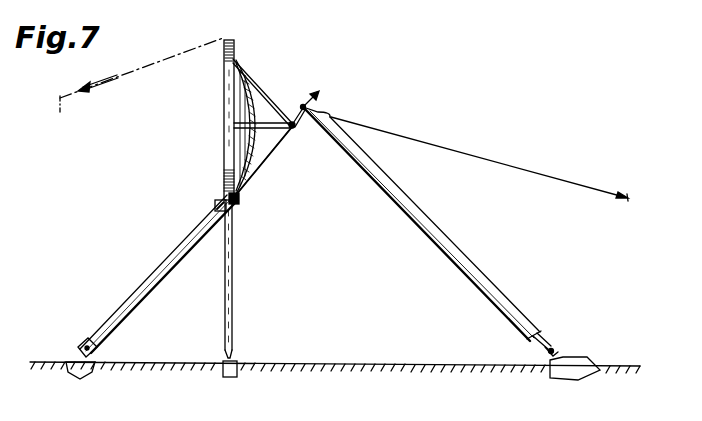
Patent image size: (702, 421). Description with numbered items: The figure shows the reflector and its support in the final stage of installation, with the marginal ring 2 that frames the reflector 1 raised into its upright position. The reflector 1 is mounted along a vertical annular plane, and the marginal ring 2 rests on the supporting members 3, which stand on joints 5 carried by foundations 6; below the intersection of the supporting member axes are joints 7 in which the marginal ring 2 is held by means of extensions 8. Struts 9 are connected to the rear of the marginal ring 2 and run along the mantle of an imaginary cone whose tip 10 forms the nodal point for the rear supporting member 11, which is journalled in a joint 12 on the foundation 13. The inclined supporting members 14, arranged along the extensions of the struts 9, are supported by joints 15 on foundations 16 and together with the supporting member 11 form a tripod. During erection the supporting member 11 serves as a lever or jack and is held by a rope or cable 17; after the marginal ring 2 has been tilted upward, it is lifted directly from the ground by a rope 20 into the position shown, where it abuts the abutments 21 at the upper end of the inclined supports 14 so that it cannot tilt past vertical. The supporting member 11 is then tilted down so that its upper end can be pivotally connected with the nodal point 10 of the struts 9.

The reflector 1 is at (250, 99).
The marginal ring 2 is at (229, 83).
The supporting member 3 is at (233, 272).
The joint 5 is at (233, 356).
The foundation 6 is at (230, 376).
The joint 7 is at (228, 204).
The extension 8 is at (239, 198).
The strut 9 is at (262, 153).
The tip 10 is at (295, 124).
The supporting member 11 is at (462, 264).
The foot joint 12 is at (554, 352).
The foundation 13 is at (574, 377).
The supporting member 14 is at (187, 238).
The joint 15 is at (82, 351).
The foundation 16 is at (75, 373).
The cable 17 is at (518, 170).
The rope 20 is at (172, 56).
The abutment 21 is at (221, 205).